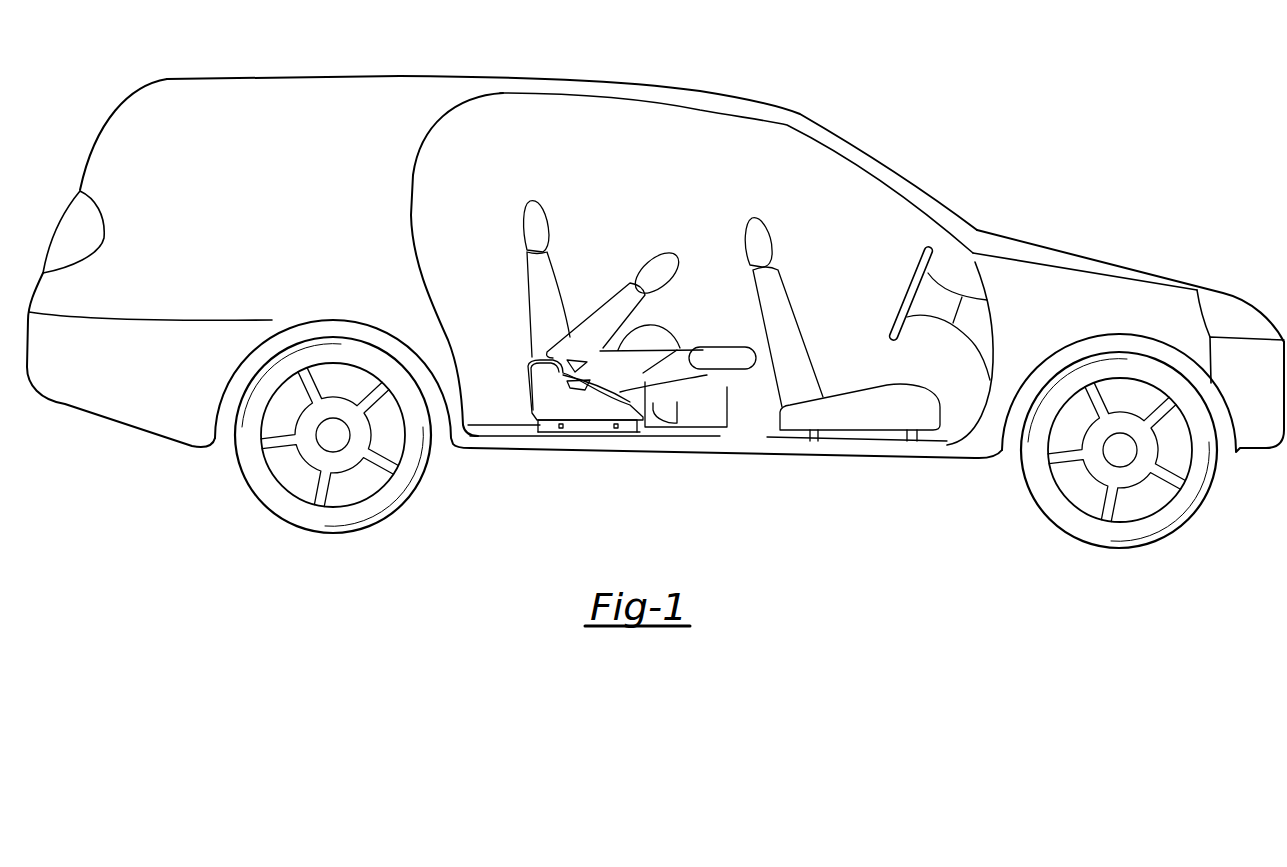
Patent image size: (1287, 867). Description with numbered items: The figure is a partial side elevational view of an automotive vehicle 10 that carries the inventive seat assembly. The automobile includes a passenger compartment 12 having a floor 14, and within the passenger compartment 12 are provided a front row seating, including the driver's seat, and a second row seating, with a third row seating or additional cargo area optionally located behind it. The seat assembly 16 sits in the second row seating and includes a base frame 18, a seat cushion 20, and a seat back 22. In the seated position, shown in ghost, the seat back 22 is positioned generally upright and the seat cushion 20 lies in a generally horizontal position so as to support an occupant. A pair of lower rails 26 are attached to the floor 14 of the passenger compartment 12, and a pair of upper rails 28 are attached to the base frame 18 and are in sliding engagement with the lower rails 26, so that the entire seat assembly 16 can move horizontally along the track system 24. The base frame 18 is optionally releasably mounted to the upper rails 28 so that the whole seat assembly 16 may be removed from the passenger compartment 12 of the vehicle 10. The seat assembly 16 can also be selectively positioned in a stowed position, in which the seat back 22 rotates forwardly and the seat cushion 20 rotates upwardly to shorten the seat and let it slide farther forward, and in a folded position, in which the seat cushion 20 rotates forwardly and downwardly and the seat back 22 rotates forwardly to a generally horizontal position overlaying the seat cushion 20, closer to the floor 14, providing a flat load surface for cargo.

The automotive vehicle 10 is at (877, 93).
The passenger compartment 12 is at (543, 103).
The floor 14 is at (795, 440).
The seat assembly 16 is at (622, 188).
The base frame 18 is at (528, 400).
The seat cushion 20 is at (667, 317).
The seat back 22 is at (617, 305).
The track system 24 is at (566, 455).
The lower rails 26 is at (663, 432).
The upper rails 28 is at (599, 432).